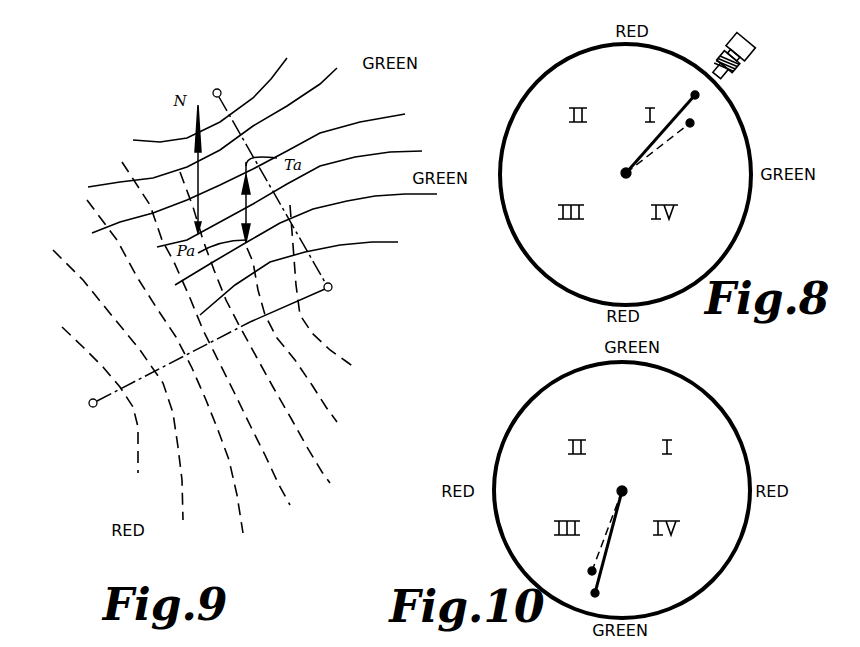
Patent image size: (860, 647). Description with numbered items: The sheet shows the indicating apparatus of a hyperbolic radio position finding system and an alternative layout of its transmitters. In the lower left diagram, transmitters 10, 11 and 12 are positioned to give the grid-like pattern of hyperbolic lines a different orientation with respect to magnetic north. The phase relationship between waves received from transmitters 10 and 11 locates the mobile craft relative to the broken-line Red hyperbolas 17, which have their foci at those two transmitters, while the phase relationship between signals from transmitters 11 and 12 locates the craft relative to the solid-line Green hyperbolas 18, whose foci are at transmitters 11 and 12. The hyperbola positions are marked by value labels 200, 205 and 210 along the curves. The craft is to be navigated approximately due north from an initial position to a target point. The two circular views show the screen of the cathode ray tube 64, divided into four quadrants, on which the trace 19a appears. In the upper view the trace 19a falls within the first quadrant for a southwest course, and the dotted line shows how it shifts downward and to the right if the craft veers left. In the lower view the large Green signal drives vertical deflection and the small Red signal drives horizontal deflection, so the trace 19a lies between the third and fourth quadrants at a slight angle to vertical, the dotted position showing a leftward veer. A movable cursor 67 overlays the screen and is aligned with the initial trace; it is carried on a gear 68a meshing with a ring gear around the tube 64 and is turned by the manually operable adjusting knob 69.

In FIG. 9, the transmitter 10 is at (90, 406).
In FIG. 9, the transmitter 11 is at (332, 287).
In FIG. 9, the transmitter 12 is at (221, 92).
In FIG. 9, the Red hyperbolas 17 is at (184, 515).
In FIG. 9, the Green hyperbolas 18 is at (330, 76).
In FIG. 8, the trace 19a is at (655, 144).
In FIG. 10, the trace 19a is at (603, 576).
In FIG. 8, the cathode ray tube 64 is at (754, 145).
In FIG. 10, the cathode ray tube 64 is at (740, 430).
In FIG. 8, the movable cursor 67 is at (722, 76).
In FIG. 8, the gear 68a is at (719, 50).
In FIG. 8, the adjusting knob 69 is at (748, 43).
In FIG. 9, the line of position value 200 is at (223, 270).
In FIG. 9, the line of position value 205 is at (363, 319).
In FIG. 9, the line of position value 210 is at (390, 309).